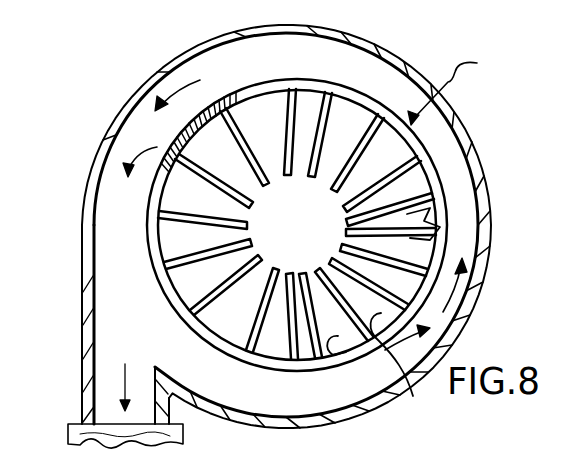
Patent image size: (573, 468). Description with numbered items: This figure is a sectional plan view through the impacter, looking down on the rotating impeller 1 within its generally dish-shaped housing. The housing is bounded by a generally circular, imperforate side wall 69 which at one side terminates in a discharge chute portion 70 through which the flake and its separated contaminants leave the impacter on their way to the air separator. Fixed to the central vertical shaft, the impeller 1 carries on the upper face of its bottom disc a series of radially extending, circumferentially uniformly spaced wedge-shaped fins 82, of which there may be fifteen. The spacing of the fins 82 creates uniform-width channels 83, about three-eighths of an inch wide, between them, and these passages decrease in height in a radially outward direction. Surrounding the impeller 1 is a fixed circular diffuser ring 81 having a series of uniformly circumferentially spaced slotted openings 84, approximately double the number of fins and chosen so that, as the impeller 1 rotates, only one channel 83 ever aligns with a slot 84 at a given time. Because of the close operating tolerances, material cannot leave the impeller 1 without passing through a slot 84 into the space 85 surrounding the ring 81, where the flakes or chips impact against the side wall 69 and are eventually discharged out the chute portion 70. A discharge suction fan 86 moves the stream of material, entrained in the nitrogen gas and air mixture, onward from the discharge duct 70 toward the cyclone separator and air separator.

The side wall 69 is at (487, 190).
The discharge chute portion 70 is at (81, 405).
The diffuser ring 81 is at (284, 80).
The fins 82 is at (379, 366).
The channels 83 is at (428, 226).
The slotted openings 84 is at (196, 121).
The space 85 is at (444, 153).
The discharge suction fan 86 is at (185, 434).
The impeller disk 1 is at (493, 67).